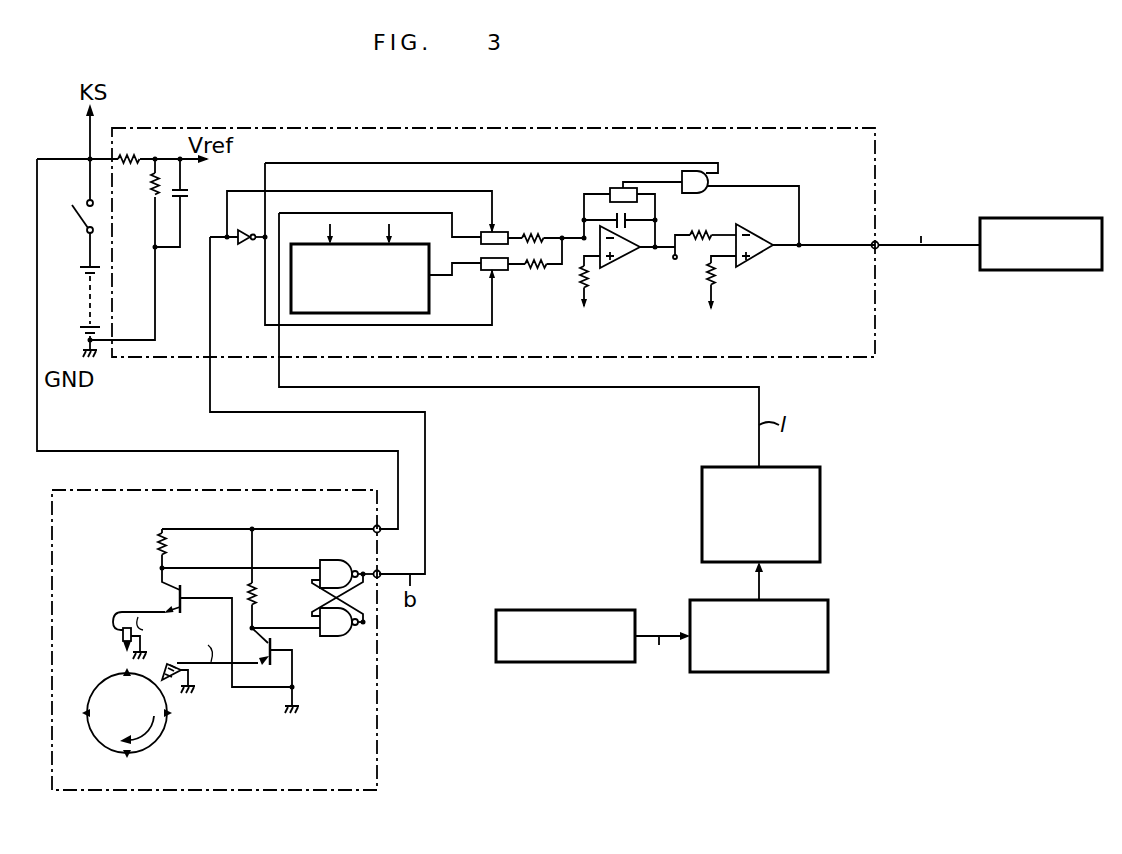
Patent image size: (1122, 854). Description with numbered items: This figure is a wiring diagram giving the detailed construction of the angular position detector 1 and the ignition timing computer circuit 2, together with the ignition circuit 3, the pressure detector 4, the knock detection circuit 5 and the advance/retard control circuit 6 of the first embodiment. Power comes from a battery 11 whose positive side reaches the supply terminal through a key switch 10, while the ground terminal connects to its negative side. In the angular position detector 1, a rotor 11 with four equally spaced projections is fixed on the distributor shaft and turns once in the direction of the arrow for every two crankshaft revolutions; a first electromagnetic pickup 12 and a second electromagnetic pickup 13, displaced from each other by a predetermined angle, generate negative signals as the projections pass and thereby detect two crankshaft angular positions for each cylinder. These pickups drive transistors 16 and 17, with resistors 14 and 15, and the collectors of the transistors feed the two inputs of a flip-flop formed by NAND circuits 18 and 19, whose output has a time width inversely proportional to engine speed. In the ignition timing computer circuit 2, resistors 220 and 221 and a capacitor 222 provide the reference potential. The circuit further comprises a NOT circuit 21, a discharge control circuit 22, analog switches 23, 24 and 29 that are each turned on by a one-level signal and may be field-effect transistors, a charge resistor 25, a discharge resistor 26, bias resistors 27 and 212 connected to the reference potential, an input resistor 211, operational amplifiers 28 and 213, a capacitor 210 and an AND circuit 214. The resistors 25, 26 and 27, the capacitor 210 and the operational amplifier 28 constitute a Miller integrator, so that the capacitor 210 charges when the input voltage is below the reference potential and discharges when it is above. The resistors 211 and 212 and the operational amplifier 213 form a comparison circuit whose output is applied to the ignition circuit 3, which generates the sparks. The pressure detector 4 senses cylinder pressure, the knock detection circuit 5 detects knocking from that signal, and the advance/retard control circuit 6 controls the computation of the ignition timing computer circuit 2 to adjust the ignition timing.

The angular position detector 1 is at (377, 670).
The ignition timing computer circuit 2 is at (875, 305).
The ignition circuit 3 is at (1035, 218).
The pressure detector 4 is at (562, 610).
The knock detection circuit 5 is at (830, 631).
The advance/retard control circuit 6 is at (702, 511).
The key switch 10 is at (76, 226).
The rotor / battery 11 is at (80, 298).
The first electromagnetic pickup 12 is at (121, 633).
The second electromagnetic pickup 13 is at (194, 676).
The resistor 14 is at (166, 548).
The resistor 15 is at (256, 597).
The transistor 16 is at (166, 598).
The transistor 17 is at (270, 664).
The NAND circuit 18 is at (326, 560).
The NAND circuit 19 is at (326, 637).
The NOT circuit 21 is at (251, 243).
The discharge control circuit 22 is at (429, 292).
The analog switch 23 is at (485, 230).
The analog switch 24 is at (500, 270).
The charge resistor 25 is at (532, 237).
The discharge resistor 26 is at (537, 268).
The bias resistor 27 is at (588, 278).
The operational amplifier 28 is at (628, 258).
The analog switch 29 is at (620, 188).
The capacitor 210 is at (633, 214).
The input resistor 211 is at (706, 232).
The bias resistor 212 is at (714, 280).
The operational amplifier 213 is at (760, 258).
The AND circuit 214 is at (698, 171).
The resistor 220 is at (135, 157).
The resistor 221 is at (151, 185).
The capacitor 222 is at (192, 190).